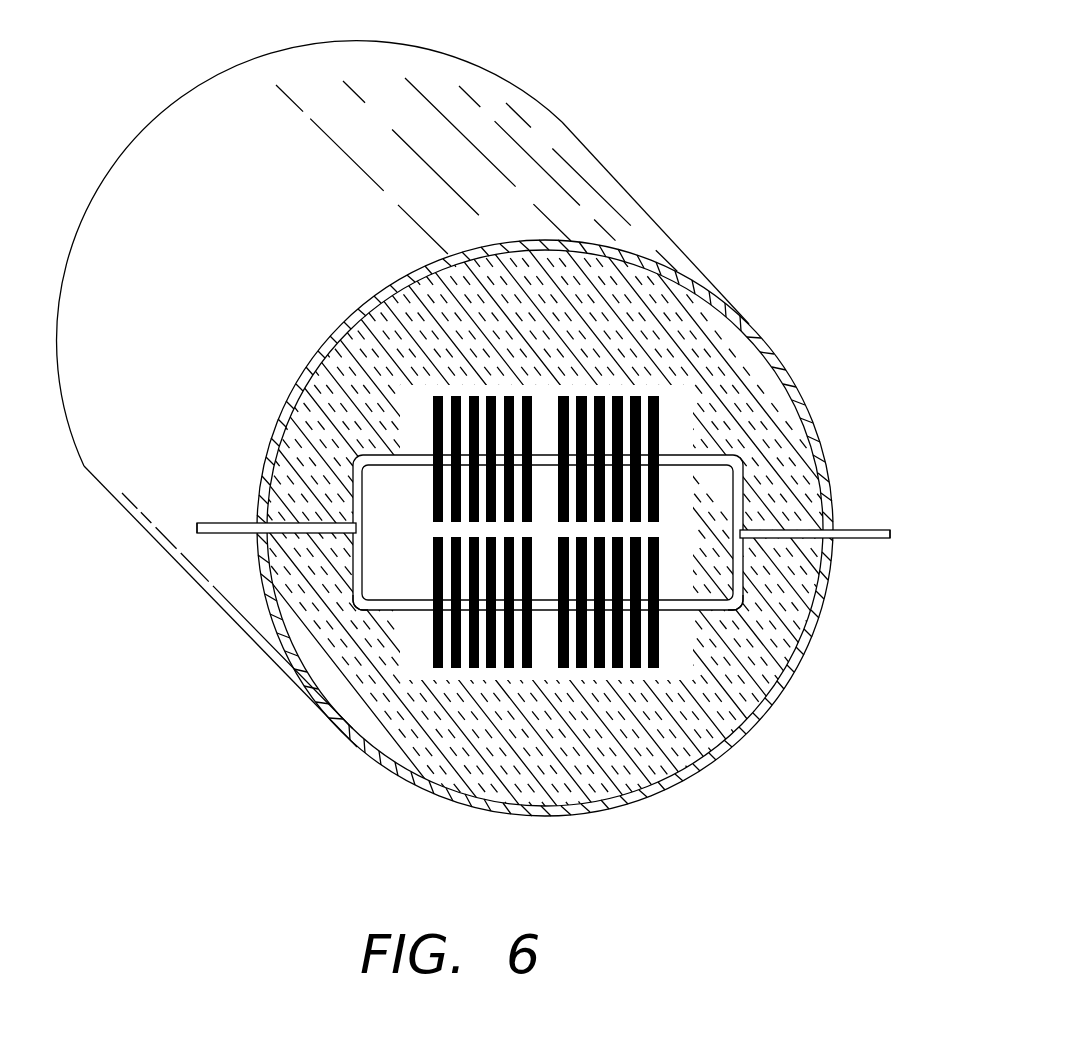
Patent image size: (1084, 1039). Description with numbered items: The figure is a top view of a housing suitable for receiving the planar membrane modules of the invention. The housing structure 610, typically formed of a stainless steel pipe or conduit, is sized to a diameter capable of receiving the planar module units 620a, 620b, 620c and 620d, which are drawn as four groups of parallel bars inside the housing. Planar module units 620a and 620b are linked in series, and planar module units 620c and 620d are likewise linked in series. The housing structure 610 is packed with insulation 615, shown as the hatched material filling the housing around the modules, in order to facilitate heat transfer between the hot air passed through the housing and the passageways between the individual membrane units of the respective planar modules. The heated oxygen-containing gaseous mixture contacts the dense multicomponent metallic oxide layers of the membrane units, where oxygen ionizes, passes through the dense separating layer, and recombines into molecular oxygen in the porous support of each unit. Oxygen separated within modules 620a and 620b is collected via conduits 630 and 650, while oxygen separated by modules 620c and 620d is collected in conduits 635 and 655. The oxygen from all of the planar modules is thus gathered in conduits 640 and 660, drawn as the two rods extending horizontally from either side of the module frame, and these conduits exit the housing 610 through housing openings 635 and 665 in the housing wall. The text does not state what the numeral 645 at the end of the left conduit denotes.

The housing structure 610 is at (327, 343).
The insulation 615 is at (608, 300).
The planar module unit 620a is at (450, 397).
The planar module unit 620b is at (628, 395).
The planar module unit 620c is at (448, 663).
The planar module unit 620d is at (623, 663).
The conduit 630 is at (358, 455).
The conduit 635 is at (367, 600).
The conduit 640 is at (302, 523).
The left lead end 645 is at (258, 530).
The conduit 650 is at (718, 462).
The conduit 655 is at (727, 610).
The conduit 660 is at (790, 527).
The housing opening 665 is at (835, 537).